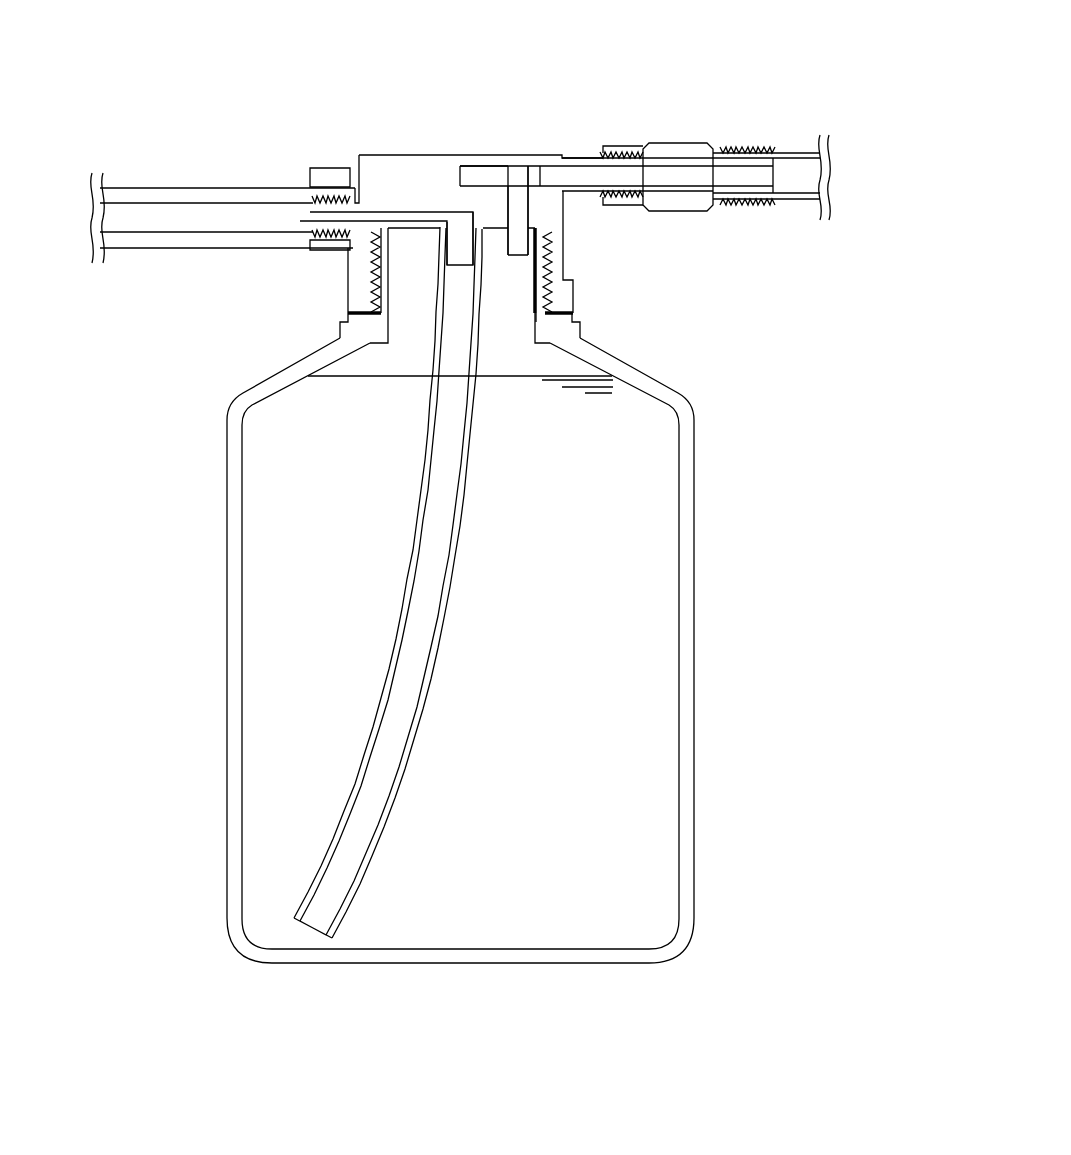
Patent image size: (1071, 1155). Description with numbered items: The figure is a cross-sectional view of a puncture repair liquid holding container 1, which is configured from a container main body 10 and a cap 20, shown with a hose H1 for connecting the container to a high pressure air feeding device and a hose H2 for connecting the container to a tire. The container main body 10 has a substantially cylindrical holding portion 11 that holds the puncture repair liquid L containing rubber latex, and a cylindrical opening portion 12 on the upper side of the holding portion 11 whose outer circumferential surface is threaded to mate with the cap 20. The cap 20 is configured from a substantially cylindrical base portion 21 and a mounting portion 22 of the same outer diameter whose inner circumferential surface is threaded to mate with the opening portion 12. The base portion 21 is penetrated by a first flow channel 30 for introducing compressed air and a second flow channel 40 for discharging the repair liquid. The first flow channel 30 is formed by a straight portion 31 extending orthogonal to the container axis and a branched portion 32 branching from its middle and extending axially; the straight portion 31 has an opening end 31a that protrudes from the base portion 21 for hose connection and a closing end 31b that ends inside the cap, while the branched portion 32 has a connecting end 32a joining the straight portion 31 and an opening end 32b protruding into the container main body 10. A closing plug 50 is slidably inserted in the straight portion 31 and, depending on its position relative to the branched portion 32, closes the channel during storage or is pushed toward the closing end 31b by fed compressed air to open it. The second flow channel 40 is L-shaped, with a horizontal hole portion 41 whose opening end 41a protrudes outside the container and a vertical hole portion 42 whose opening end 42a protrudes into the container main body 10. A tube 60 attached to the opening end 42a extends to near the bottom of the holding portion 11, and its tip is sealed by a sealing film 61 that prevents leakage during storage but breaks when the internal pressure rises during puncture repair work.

The puncture repair liquid holding container 1 is at (450, 102).
The container main body 10 is at (695, 664).
The holding portion 11 is at (686, 540).
The opening portion 12 is at (377, 367).
The puncture repair liquid L is at (617, 415).
The cap 20 is at (384, 152).
The base portion 21 is at (412, 182).
The mounting portion 22 is at (566, 280).
The first flow channel 30 is at (705, 225).
The straight portion 31 is at (572, 186).
The opening end 31a is at (640, 190).
The closing end 31b is at (468, 176).
The branched portion 32 is at (570, 198).
The connecting end 32a is at (548, 190).
The opening end 32b is at (553, 306).
The second flow channel 40 is at (248, 255).
The horizontal hole portion 41 is at (357, 252).
The opening end 41a is at (317, 185).
The vertical hole portion 42 is at (447, 241).
The opening end 42a is at (350, 326).
The closing plug 50 is at (523, 170).
The tube 60 is at (407, 620).
The sealing film 61 is at (310, 926).
The hose H1 is at (782, 172).
The hose H2 is at (222, 188).